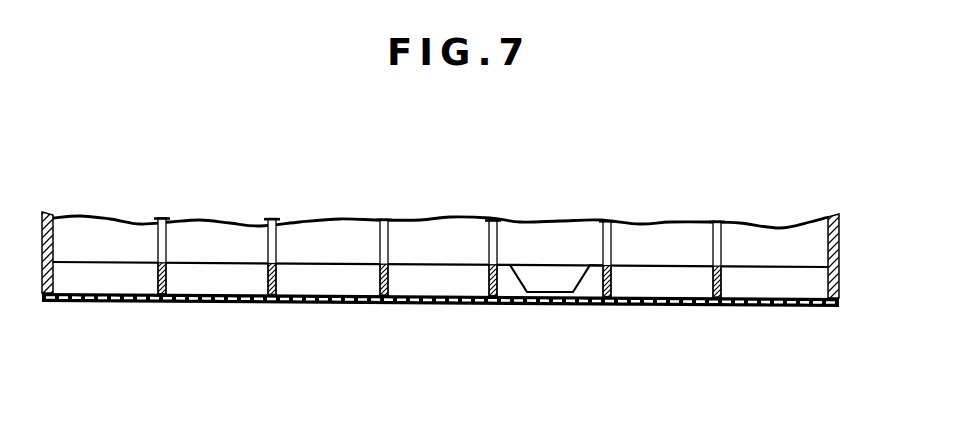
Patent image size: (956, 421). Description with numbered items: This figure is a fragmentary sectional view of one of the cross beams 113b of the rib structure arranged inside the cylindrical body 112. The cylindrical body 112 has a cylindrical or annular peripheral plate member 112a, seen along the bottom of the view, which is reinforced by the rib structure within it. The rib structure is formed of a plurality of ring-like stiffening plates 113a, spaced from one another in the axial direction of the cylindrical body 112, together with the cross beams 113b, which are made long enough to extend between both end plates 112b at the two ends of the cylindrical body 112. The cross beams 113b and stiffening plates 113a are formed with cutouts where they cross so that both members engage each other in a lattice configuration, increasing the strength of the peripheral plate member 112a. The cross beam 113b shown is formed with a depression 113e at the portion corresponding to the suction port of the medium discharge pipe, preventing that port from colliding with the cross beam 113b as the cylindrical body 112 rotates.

The cylindrical body 112 is at (440, 267).
The peripheral plate member 112a is at (440, 304).
The end plates 112b is at (62, 247).
The ring-like stiffening plates 113a is at (267, 247).
The cross beams 113b is at (332, 277).
The depression 113e is at (545, 293).